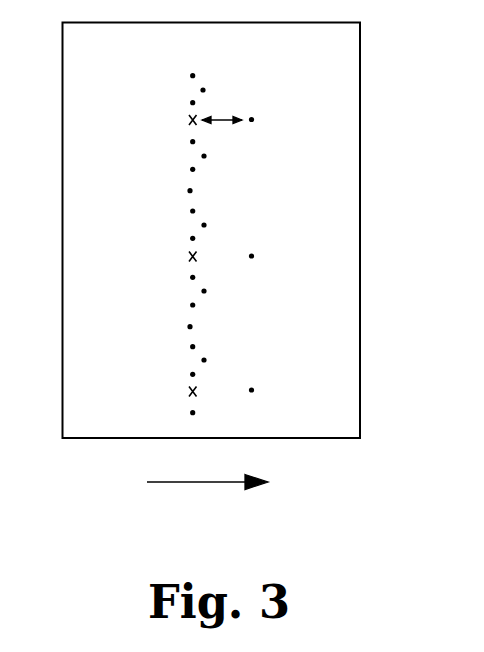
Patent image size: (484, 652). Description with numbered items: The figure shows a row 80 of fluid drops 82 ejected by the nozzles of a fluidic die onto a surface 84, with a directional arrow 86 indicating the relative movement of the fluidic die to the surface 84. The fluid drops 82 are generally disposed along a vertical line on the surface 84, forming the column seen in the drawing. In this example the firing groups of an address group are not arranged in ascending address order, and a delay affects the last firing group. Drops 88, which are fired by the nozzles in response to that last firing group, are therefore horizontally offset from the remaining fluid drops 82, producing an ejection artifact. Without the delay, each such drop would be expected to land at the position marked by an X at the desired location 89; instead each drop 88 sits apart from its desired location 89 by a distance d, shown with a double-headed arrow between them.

The row of fluid drops 80 is at (148, 76).
The fluid drop 82 is at (206, 90).
The surface 84 is at (360, 83).
The directional arrow 86 is at (203, 483).
The offset fluid drop 88 is at (254, 120).
The desired location 89 is at (188, 120).
The distance d is at (222, 136).